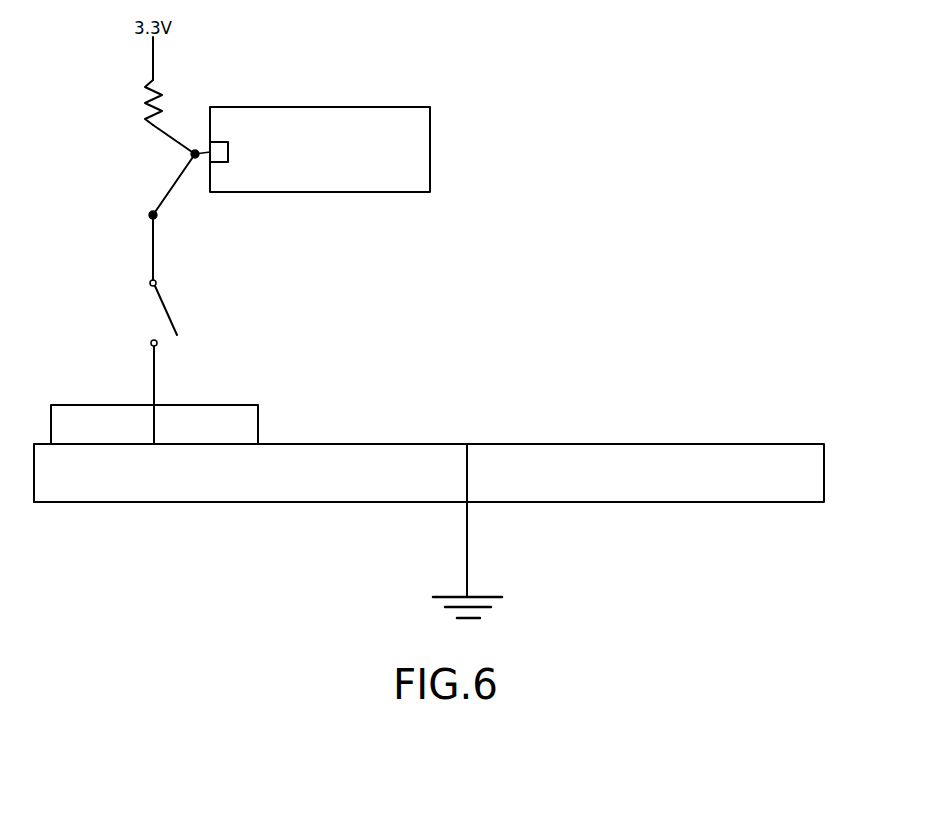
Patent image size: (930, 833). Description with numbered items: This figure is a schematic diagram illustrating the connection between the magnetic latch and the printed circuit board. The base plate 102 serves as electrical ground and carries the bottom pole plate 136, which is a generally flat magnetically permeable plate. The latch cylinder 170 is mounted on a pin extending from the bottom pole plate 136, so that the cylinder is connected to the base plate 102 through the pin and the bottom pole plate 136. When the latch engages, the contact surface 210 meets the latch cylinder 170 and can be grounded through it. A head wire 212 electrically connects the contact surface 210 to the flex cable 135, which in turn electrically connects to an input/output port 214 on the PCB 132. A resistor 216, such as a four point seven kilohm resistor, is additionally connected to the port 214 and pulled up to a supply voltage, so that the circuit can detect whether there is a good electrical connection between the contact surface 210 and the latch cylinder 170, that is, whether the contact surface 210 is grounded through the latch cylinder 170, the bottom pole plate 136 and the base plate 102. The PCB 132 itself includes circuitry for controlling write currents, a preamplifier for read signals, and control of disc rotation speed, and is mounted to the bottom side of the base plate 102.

The resistor 216 is at (155, 81).
The input/output port 214 is at (222, 150).
The printed circuit board 132 is at (320, 149).
The flex cable 135 is at (177, 182).
The head wire 212 is at (153, 258).
The contact surface 210 is at (168, 313).
The latch cylinder 170 is at (154, 370).
The bottom pole plate 136 is at (250, 420).
The base plate 102 is at (400, 458).